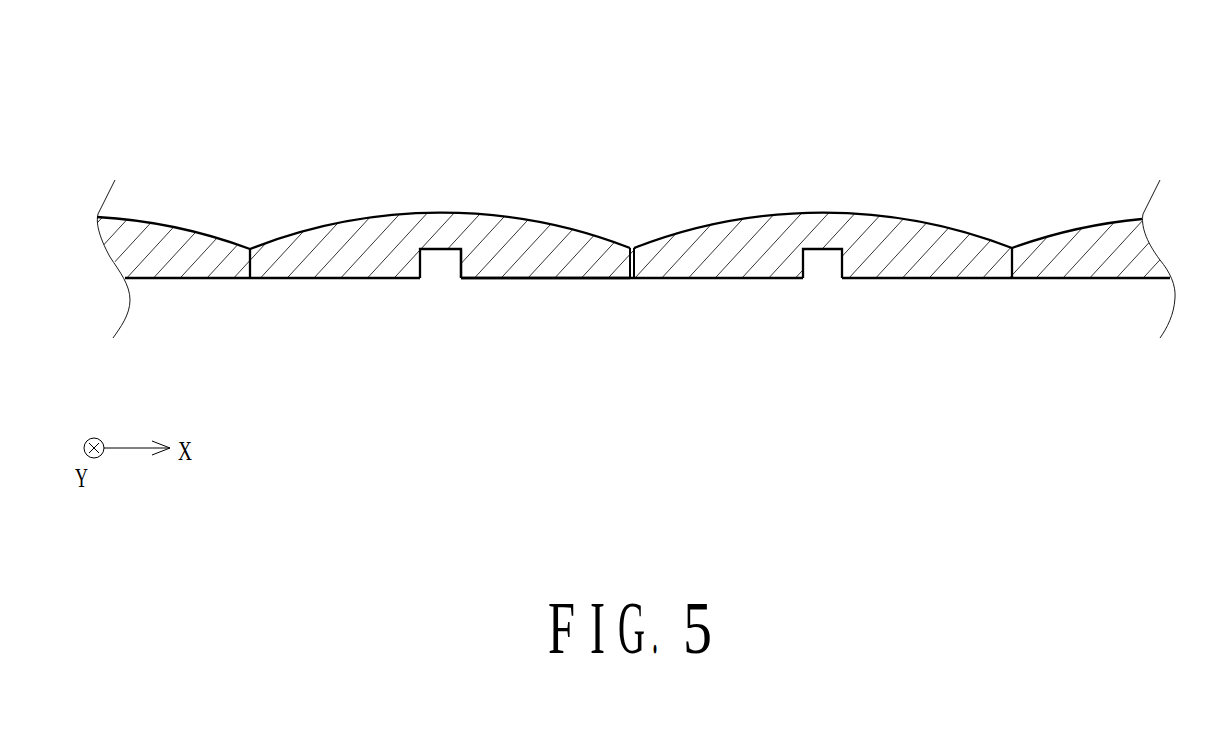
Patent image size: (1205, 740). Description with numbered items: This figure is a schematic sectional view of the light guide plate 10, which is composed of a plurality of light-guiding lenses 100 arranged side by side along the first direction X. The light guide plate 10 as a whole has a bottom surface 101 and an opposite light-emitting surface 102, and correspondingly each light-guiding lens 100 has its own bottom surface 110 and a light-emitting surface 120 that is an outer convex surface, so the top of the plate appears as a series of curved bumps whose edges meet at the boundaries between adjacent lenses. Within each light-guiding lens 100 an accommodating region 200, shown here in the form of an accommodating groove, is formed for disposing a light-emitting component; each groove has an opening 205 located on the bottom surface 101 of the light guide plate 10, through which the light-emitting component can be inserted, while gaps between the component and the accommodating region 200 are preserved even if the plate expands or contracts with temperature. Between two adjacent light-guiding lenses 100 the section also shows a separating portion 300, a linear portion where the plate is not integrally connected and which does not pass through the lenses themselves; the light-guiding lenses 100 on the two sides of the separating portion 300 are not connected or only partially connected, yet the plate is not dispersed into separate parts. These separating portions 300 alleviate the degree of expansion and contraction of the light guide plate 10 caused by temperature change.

The light guide plate 10 is at (94, 66).
The light-guiding lens 100 is at (389, 247).
The bottom surface 101 is at (300, 280).
The light-emitting surface 102 is at (323, 227).
The bottom surface 110 is at (578, 267).
The light-emitting surface 120 is at (520, 229).
The accommodating region 200 is at (436, 277).
The opening 205 is at (461, 282).
The separating portion 300 is at (632, 246).